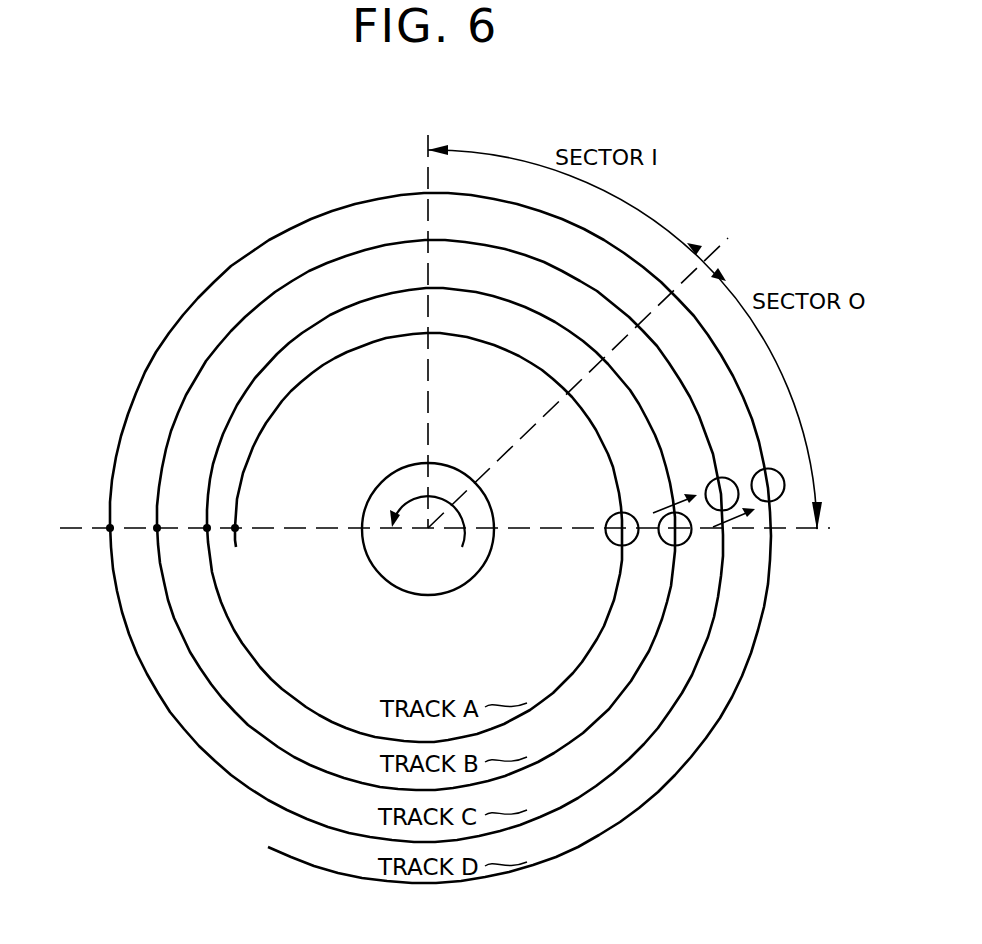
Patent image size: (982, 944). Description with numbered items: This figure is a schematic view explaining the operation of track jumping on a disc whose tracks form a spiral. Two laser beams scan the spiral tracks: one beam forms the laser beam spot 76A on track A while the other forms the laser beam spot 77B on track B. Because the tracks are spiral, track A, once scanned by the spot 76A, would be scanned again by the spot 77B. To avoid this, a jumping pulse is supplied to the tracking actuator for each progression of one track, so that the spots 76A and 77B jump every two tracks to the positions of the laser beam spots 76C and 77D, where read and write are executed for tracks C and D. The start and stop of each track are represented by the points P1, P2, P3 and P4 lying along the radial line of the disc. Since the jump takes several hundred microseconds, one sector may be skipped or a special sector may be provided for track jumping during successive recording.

The laser beam spot 76A is at (610, 518).
The laser beam spot 77B is at (664, 542).
The laser beam spot 76C is at (728, 490).
The laser beam spot 77D is at (775, 479).
The track start/stop point P1 is at (236, 528).
The track start/stop point P2 is at (208, 531).
The track start/stop point P3 is at (157, 526).
The track start/stop point P4 is at (108, 532).